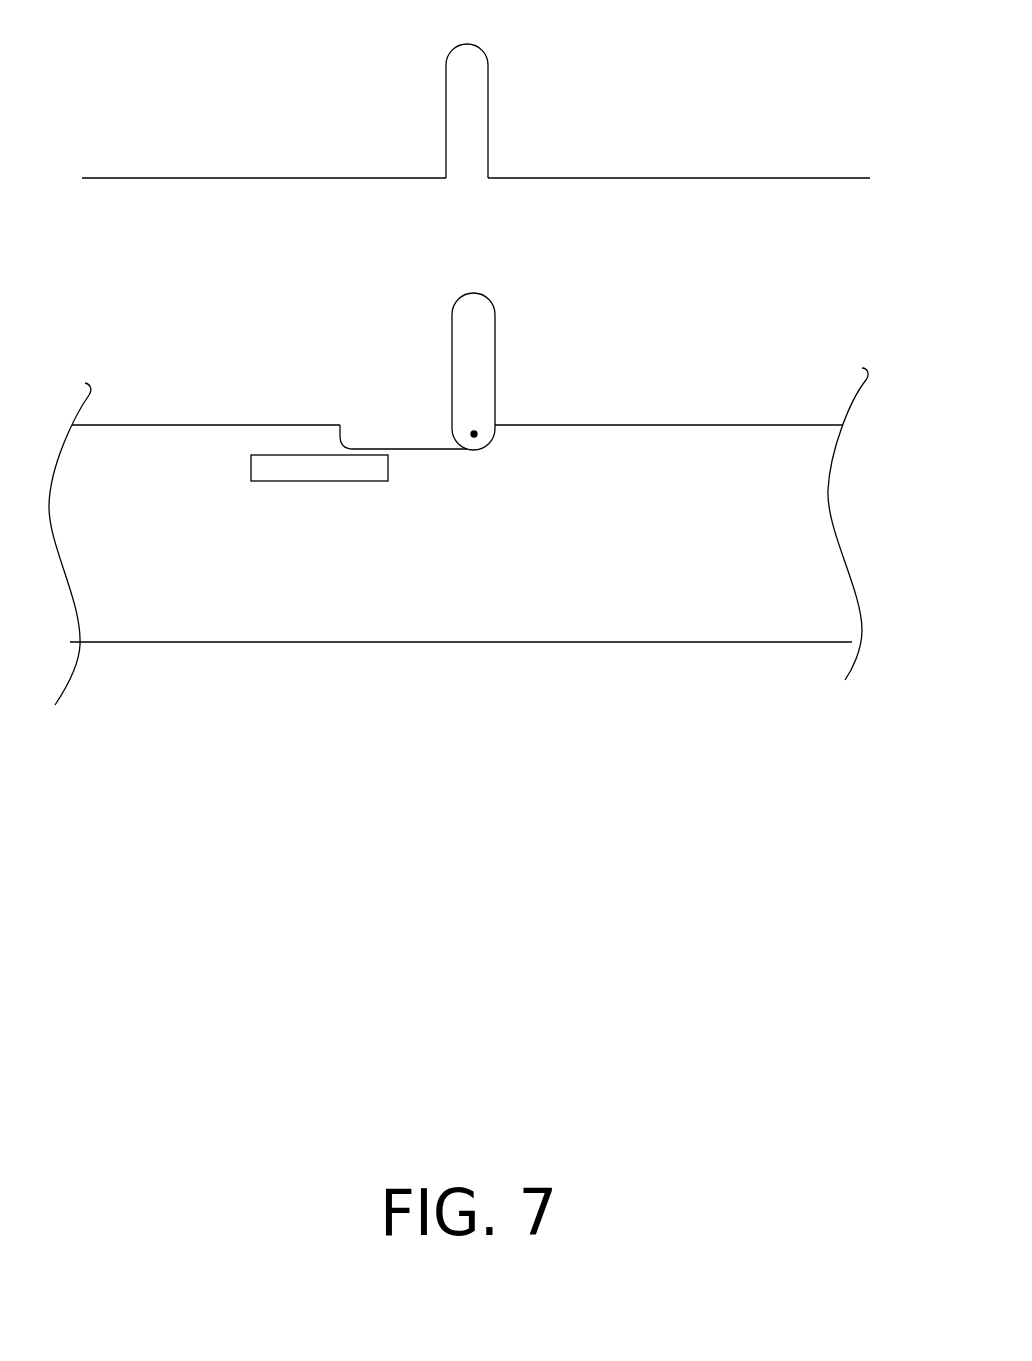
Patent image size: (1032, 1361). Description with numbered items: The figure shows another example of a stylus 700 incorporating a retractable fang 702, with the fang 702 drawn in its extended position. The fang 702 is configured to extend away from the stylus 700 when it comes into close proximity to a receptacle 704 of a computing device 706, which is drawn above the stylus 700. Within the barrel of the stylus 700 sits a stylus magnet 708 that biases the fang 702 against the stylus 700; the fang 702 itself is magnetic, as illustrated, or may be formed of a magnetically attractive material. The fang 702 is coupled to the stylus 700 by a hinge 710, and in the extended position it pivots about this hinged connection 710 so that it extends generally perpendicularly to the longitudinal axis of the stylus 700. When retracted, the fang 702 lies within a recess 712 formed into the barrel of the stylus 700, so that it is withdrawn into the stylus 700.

The stylus 700 is at (790, 383).
The fang 702 is at (450, 320).
The receptacle 704 is at (468, 137).
The computing device 706 is at (268, 126).
The stylus magnet 708 is at (305, 466).
The hinge 710 is at (477, 432).
The recess 712 is at (378, 437).